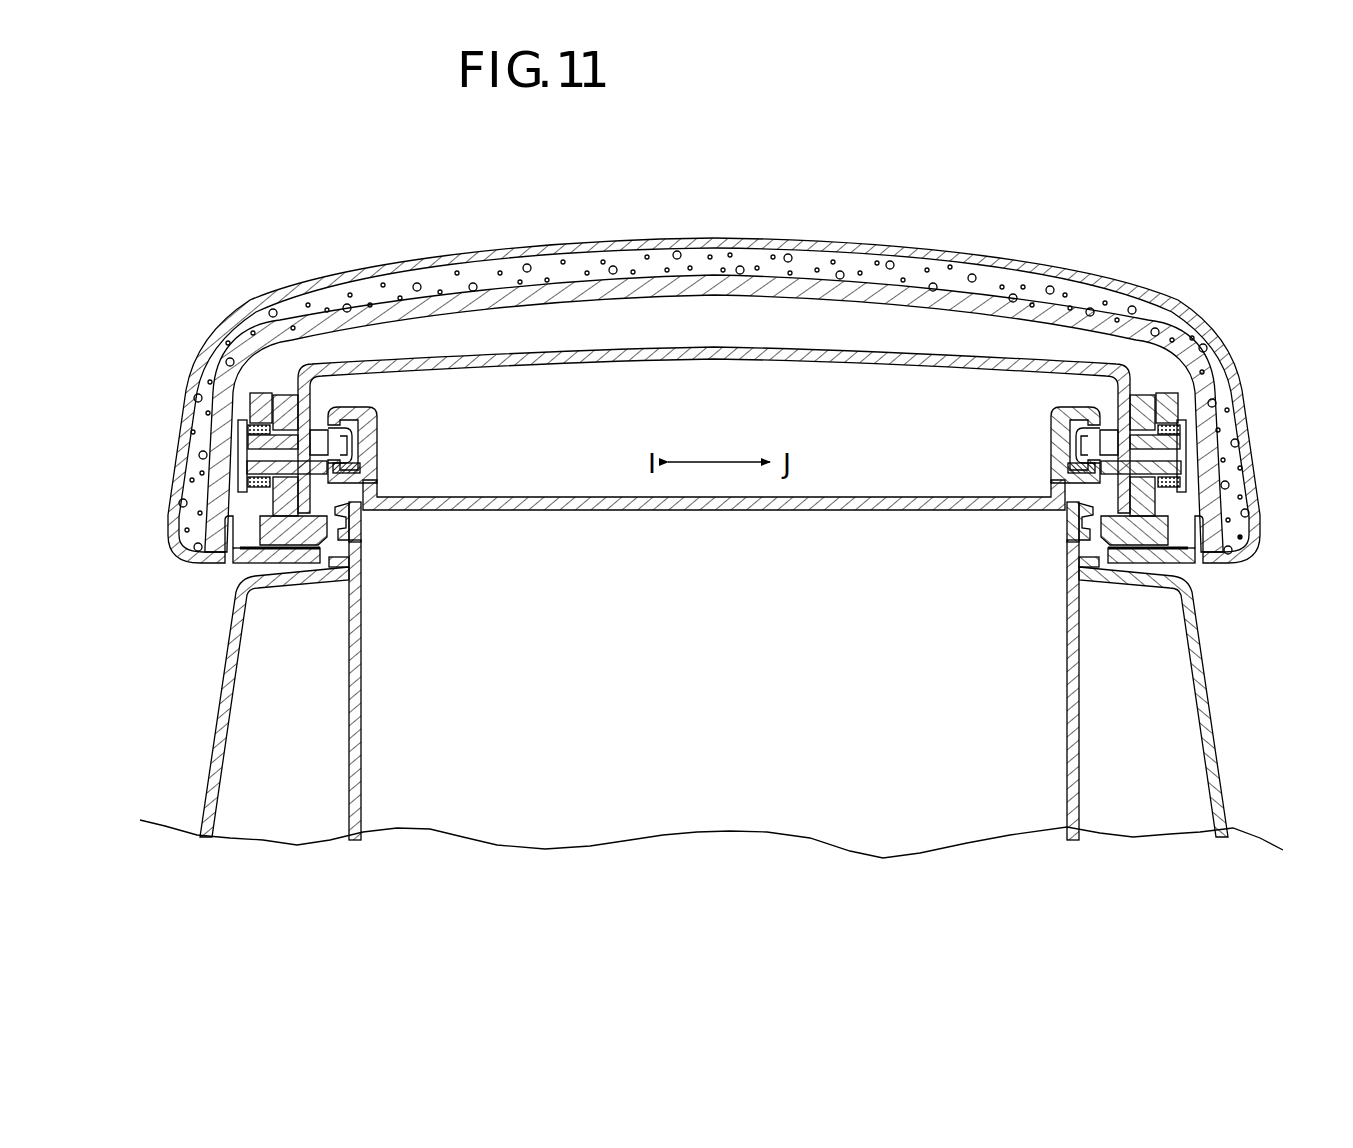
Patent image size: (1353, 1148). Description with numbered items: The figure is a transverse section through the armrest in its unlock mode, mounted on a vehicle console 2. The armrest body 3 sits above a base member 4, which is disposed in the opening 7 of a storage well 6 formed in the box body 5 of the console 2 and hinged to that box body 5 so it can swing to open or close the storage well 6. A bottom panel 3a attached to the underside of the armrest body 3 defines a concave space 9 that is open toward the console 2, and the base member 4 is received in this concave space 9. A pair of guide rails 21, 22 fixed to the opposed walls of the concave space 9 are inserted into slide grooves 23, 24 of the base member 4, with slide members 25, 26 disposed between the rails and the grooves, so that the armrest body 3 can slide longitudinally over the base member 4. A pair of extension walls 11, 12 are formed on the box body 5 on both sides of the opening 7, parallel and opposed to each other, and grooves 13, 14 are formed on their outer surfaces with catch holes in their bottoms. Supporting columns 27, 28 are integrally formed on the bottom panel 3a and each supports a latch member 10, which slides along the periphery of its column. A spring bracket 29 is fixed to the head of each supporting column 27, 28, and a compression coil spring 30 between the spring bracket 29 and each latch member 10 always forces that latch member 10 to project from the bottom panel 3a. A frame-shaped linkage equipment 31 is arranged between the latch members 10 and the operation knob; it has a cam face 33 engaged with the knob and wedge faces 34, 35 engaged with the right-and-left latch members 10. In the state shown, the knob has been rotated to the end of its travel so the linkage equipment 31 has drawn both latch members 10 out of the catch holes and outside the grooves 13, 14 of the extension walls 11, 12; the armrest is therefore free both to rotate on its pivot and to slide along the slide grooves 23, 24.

The vehicle console 2 is at (212, 696).
The armrest body 3 is at (608, 226).
The bottom panel 3a is at (697, 348).
The base member 4 is at (830, 512).
The box body 5 is at (345, 742).
The storage well 6 is at (713, 800).
The opening 7 is at (732, 580).
The concave space 9 is at (763, 402).
The latch member 10 is at (1242, 537).
The extension wall 11 is at (361, 533).
The extension wall 12 is at (1064, 530).
The groove 13 is at (340, 542).
The groove 14 is at (1082, 543).
The guide rail 21 is at (383, 405).
The guide rail 22 is at (1078, 428).
The slide groove 23 is at (345, 440).
The slide groove 24 is at (1083, 450).
The slide member 25 is at (362, 470).
The slide member 26 is at (1070, 472).
The supporting column 27 is at (248, 443).
The supporting column 28 is at (1172, 468).
The spring bracket 29 is at (250, 467).
The compression coil spring 30 is at (250, 402).
The linkage equipment 31 is at (282, 393).
The cam face 33 is at (252, 511).
The wedge face 34 is at (255, 398).
The wedge face 35 is at (1170, 402).